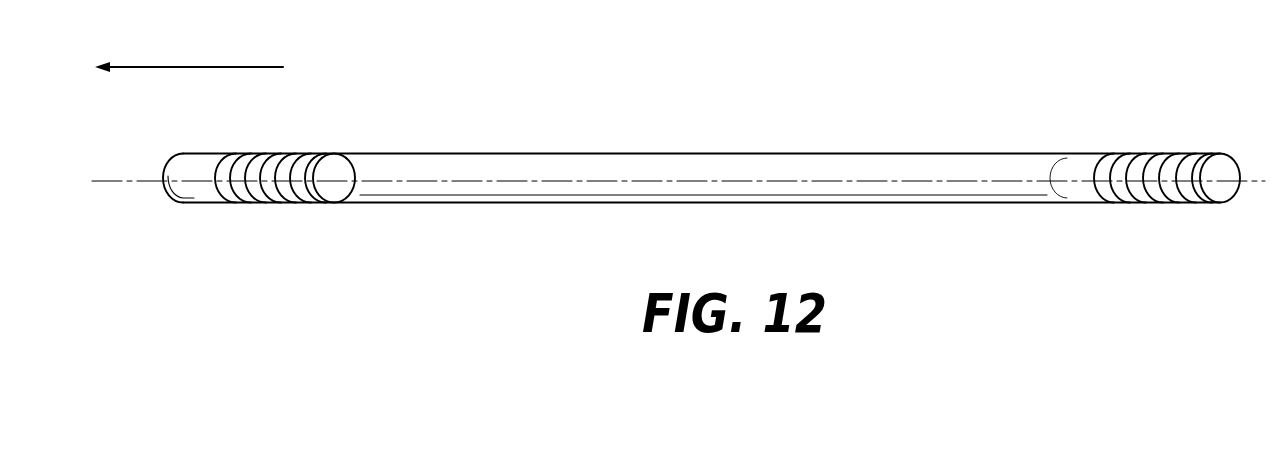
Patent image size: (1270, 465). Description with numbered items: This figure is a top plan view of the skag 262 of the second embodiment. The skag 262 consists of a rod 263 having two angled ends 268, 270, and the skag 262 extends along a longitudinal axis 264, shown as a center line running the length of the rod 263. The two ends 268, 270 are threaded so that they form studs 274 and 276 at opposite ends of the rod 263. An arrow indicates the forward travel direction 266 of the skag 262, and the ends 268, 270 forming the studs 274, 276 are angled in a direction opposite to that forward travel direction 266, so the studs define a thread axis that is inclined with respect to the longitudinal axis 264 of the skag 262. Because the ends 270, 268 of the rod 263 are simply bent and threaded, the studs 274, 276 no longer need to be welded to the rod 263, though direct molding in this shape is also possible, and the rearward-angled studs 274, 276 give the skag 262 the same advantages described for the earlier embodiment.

The skag 262 is at (668, 138).
The rod 263 is at (850, 191).
The longitudinal axis 264 is at (135, 181).
The forward travel direction 266 is at (210, 67).
The angled end 268 is at (171, 216).
The angled end 270 is at (1116, 134).
The stud 274 is at (337, 160).
The stud 276 is at (1217, 168).